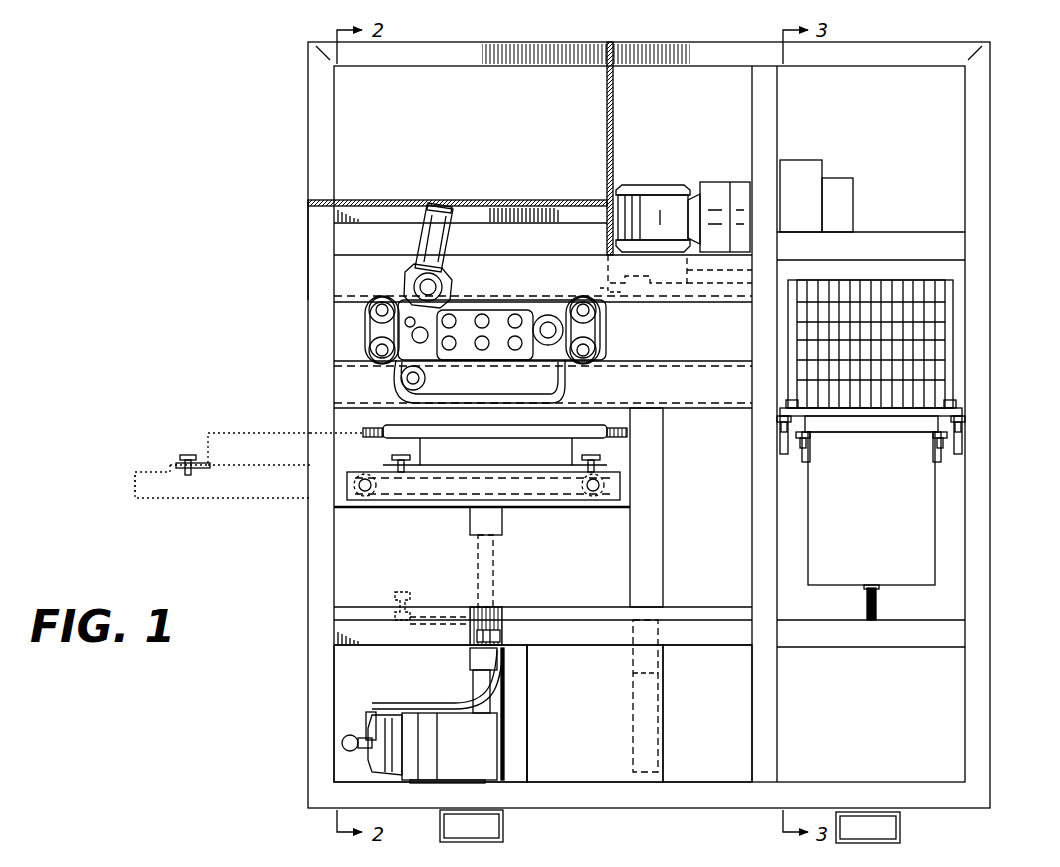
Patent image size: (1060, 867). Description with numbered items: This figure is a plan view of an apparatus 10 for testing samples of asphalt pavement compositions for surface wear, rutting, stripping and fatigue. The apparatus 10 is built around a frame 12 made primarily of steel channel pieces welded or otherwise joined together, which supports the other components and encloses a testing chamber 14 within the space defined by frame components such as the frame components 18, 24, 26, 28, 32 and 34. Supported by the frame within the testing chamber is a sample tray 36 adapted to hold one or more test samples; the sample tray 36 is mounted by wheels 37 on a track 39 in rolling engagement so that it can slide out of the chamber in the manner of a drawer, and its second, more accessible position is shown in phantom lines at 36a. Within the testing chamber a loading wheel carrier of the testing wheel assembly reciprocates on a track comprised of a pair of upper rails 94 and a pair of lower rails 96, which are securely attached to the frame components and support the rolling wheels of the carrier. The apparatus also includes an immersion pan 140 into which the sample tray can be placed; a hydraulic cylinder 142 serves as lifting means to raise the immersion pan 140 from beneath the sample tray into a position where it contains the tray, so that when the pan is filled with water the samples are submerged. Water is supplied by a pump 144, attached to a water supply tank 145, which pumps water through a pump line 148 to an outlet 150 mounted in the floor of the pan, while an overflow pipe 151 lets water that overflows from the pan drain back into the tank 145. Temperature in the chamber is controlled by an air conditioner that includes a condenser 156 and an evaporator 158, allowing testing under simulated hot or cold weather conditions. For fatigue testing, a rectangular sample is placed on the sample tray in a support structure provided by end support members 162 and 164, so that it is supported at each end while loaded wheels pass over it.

The apparatus 10 is at (205, 80).
The frame 12 is at (897, 47).
The testing chamber 14 is at (340, 387).
The frame component 18 is at (309, 251).
The frame component 24 is at (676, 650).
The frame component 26 is at (437, 200).
The frame component 28 is at (750, 488).
The frame component 32 is at (612, 285).
The frame component 34 is at (615, 143).
The sample tray 36 is at (347, 493).
The second position of sample tray 36a is at (158, 498).
The wheels 37 is at (368, 491).
The track 39 is at (440, 507).
The upper rails 94 is at (345, 300).
The lower rails 96 is at (345, 362).
The immersion pan 140 is at (385, 558).
The hydraulic cylinder 142 is at (470, 660).
The pump 144 is at (478, 725).
The water supply tank 145 is at (622, 745).
The pump line 148 is at (506, 665).
The outlet 150 is at (402, 592).
The overflow pipe 151 is at (640, 660).
The condenser 156 is at (950, 319).
The evaporator 158 is at (888, 509).
The end support member 162 is at (420, 446).
The end support member 164 is at (612, 447).